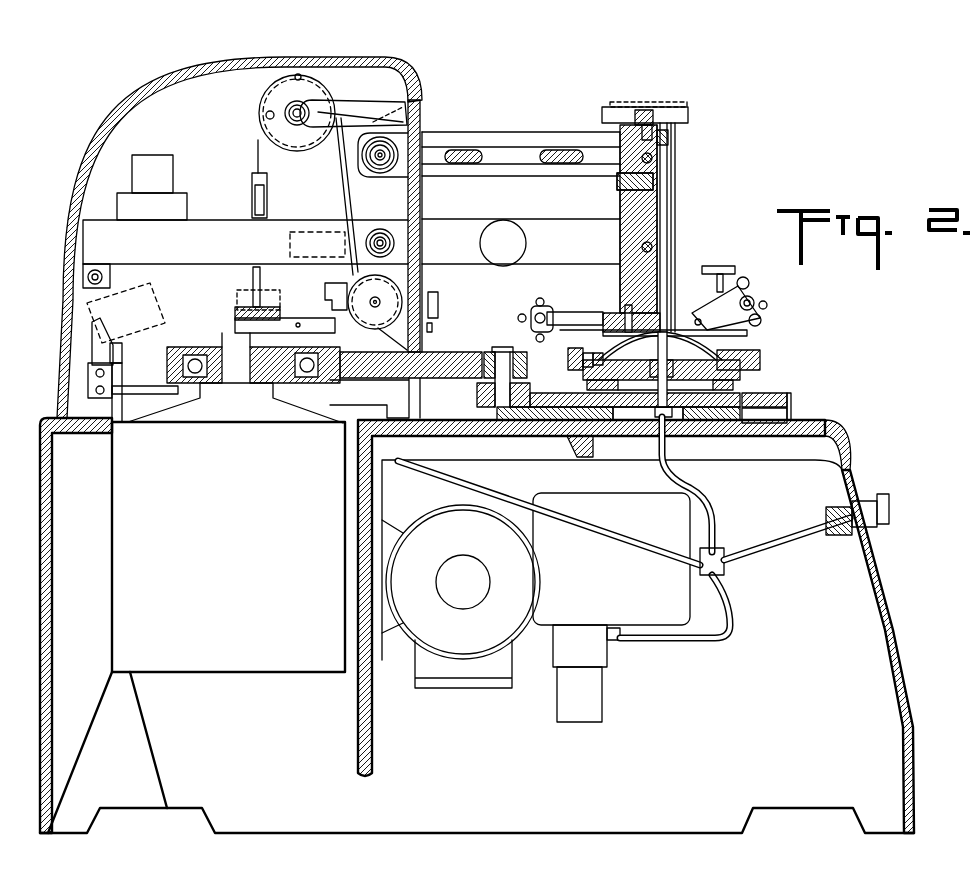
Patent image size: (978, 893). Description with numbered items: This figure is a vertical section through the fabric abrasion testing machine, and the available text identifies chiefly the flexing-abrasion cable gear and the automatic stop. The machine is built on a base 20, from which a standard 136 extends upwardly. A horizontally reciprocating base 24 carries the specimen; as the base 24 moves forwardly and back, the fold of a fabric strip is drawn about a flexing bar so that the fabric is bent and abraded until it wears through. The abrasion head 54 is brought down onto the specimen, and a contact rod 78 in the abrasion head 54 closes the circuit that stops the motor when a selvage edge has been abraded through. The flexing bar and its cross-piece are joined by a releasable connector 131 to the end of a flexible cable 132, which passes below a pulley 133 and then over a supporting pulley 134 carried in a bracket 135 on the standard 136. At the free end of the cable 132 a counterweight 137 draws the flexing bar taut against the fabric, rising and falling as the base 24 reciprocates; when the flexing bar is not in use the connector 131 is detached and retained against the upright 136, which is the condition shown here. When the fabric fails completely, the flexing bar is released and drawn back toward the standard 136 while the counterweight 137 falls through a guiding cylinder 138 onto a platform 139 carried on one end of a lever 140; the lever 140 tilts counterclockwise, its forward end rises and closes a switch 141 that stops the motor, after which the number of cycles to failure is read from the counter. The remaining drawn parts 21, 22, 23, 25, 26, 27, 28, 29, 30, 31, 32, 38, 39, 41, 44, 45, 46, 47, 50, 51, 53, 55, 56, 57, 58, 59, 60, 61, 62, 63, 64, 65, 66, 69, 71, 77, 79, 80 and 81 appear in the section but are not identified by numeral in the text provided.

The base 20 is at (862, 450).
The side wall 21 is at (895, 612).
The top wall 22 is at (836, 428).
The support bar 23 is at (748, 397).
The base 24 is at (788, 397).
The inner wall 25 is at (767, 440).
The spacer block 26 is at (791, 414).
The bolt 27 is at (503, 346).
The mounting plate 28 is at (452, 358).
The bearing assembly 29 is at (220, 347).
The compartment 30 is at (125, 554).
The boss 31 is at (637, 426).
The clamp bar 32 is at (735, 406).
The support plate 38 is at (746, 334).
The platform 39 is at (618, 345).
The holder plate 41 is at (733, 360).
The motor 44 is at (453, 642).
The pump 45 is at (718, 632).
The tube 46 is at (698, 507).
The diaphragm 47 is at (638, 405).
The tube 50 is at (758, 545).
The valve 51 is at (874, 521).
The tube 53 is at (617, 550).
The abrasion head 54 is at (686, 302).
The column 55 is at (642, 207).
The frame 56 is at (543, 233).
The top plate 57 is at (508, 138).
The pulley 58 is at (372, 237).
The pulley 59 is at (407, 150).
The guide bar 60 is at (421, 212).
The block 61 is at (177, 205).
The block 62 is at (156, 158).
The pivot bracket 63 is at (85, 277).
The lever 64 is at (98, 327).
The bracket 65 is at (88, 383).
The guide block 66 is at (564, 343).
The rollers 69 is at (548, 304).
The lever arm 71 is at (740, 302).
The handle 77 is at (727, 270).
The contact rod 78 is at (665, 218).
The cap 79 is at (677, 133).
The nut 80 is at (654, 172).
The bar 81 is at (148, 398).
The releasable connector 131 is at (430, 330).
The flexible cable 132 is at (338, 192).
The pulley 133 is at (387, 290).
The supporting pulley 134 is at (307, 85).
The bracket 135 is at (340, 107).
The standard 136 is at (415, 110).
The counterweight 137 is at (262, 195).
The guiding cylinder 138 is at (250, 203).
The platform 139 is at (272, 293).
The lever 140 is at (282, 327).
The switch 141 is at (325, 298).